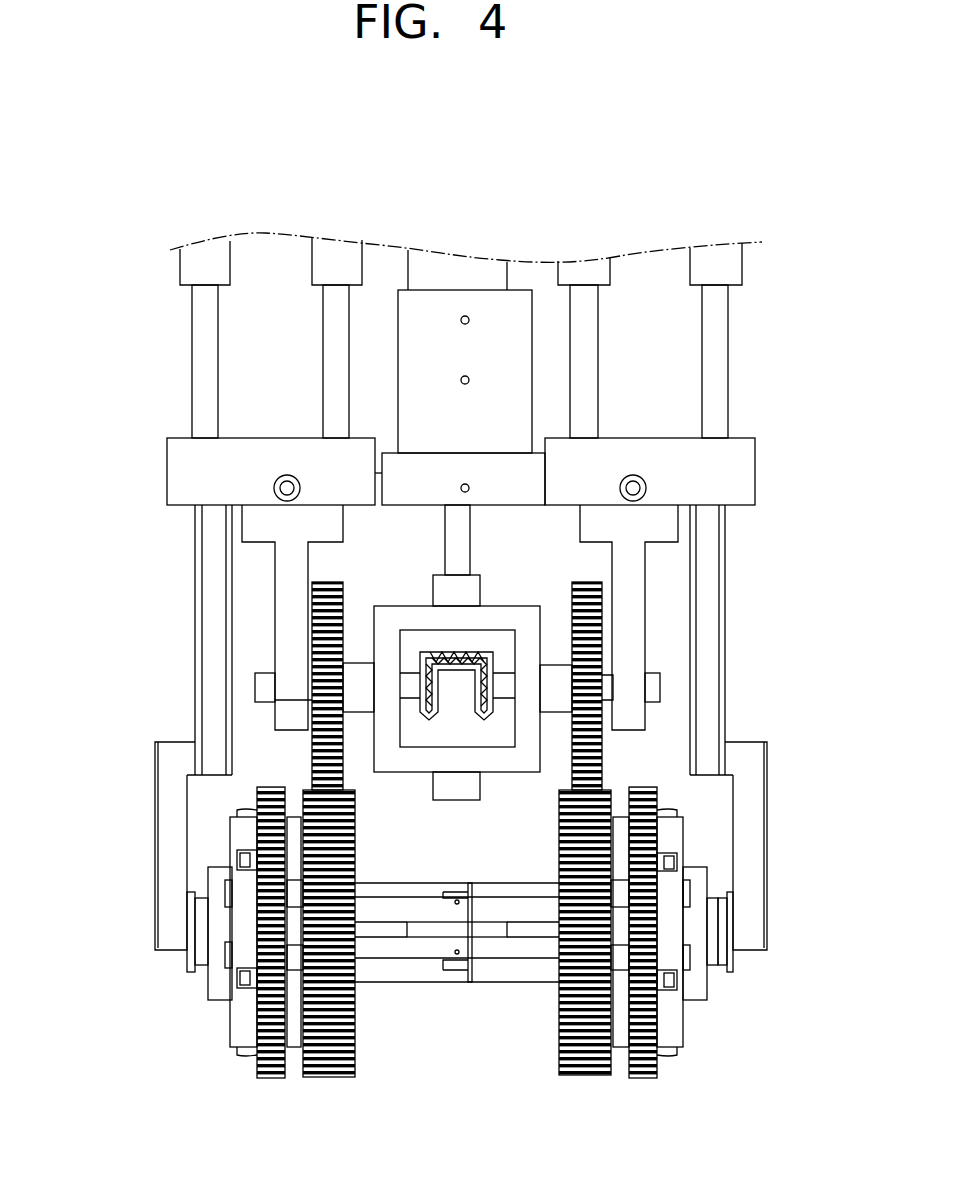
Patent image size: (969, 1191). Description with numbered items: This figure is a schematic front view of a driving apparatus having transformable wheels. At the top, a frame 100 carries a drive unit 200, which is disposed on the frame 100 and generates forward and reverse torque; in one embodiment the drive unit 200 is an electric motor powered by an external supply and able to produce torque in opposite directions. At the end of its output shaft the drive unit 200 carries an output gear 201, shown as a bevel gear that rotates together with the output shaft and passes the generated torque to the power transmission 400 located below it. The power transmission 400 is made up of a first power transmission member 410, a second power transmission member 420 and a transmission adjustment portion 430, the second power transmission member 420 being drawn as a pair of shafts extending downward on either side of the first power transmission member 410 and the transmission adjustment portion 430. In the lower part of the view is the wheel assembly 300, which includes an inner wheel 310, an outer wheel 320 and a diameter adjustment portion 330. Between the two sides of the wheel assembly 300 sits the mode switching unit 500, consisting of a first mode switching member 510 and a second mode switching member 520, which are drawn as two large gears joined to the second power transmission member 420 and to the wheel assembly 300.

The frame 100 is at (185, 466).
The drive unit 200 is at (507, 313).
The output gear 201 is at (460, 652).
The wheel assembly 300 is at (400, 911).
The inner wheel 310 is at (233, 925).
The outer wheel 320 is at (262, 823).
The diameter adjustment portion 330 is at (396, 1005).
The power transmission 400 is at (605, 675).
The first power transmission member 410 is at (490, 705).
The second power transmission member 420 is at (583, 617).
The transmission adjustment portion 430 is at (585, 663).
The mode switching unit 500 is at (457, 983).
The first mode switching member 510 is at (563, 1047).
The second mode switching member 520 is at (342, 1042).